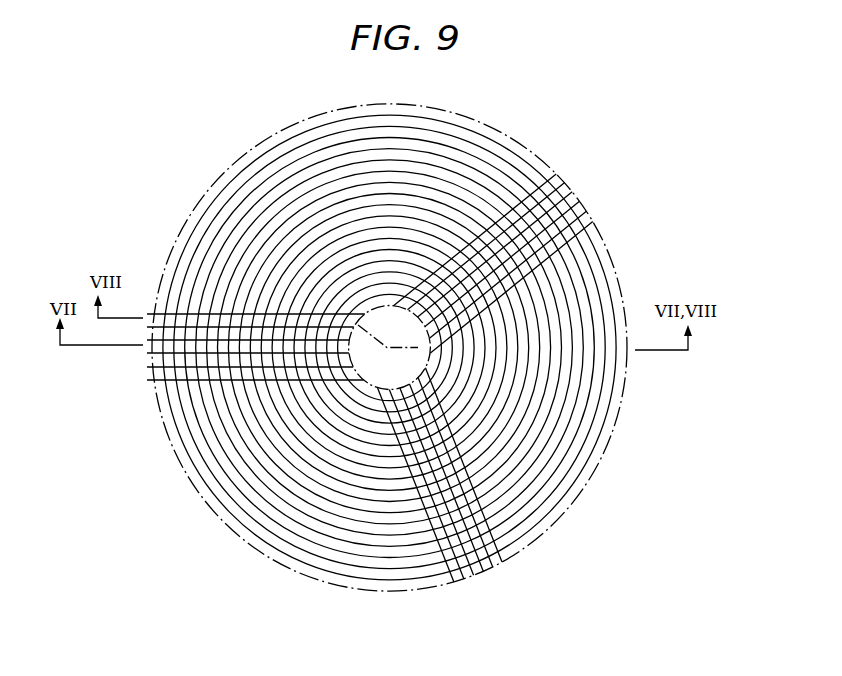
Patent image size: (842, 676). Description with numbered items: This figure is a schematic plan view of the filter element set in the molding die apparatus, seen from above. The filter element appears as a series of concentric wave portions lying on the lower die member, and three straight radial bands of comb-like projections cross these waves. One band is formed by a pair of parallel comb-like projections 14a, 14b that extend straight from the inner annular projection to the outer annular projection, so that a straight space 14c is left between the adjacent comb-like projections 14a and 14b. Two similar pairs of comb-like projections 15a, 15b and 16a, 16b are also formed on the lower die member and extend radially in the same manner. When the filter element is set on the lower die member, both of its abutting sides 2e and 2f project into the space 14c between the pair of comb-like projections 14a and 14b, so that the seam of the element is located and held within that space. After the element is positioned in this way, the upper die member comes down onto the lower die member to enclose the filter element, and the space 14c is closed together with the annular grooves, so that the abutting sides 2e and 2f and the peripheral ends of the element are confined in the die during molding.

The comb-like projection 14a is at (213, 374).
The comb-like projection 14b is at (172, 312).
The straight space 14c is at (337, 347).
The comb-like projection 15a is at (460, 567).
The comb-like projection 15b is at (488, 550).
The comb-like projection 16a is at (570, 218).
The comb-like projection 16b is at (548, 193).
The abutting side 2e is at (152, 343).
The abutting side 2f is at (153, 368).